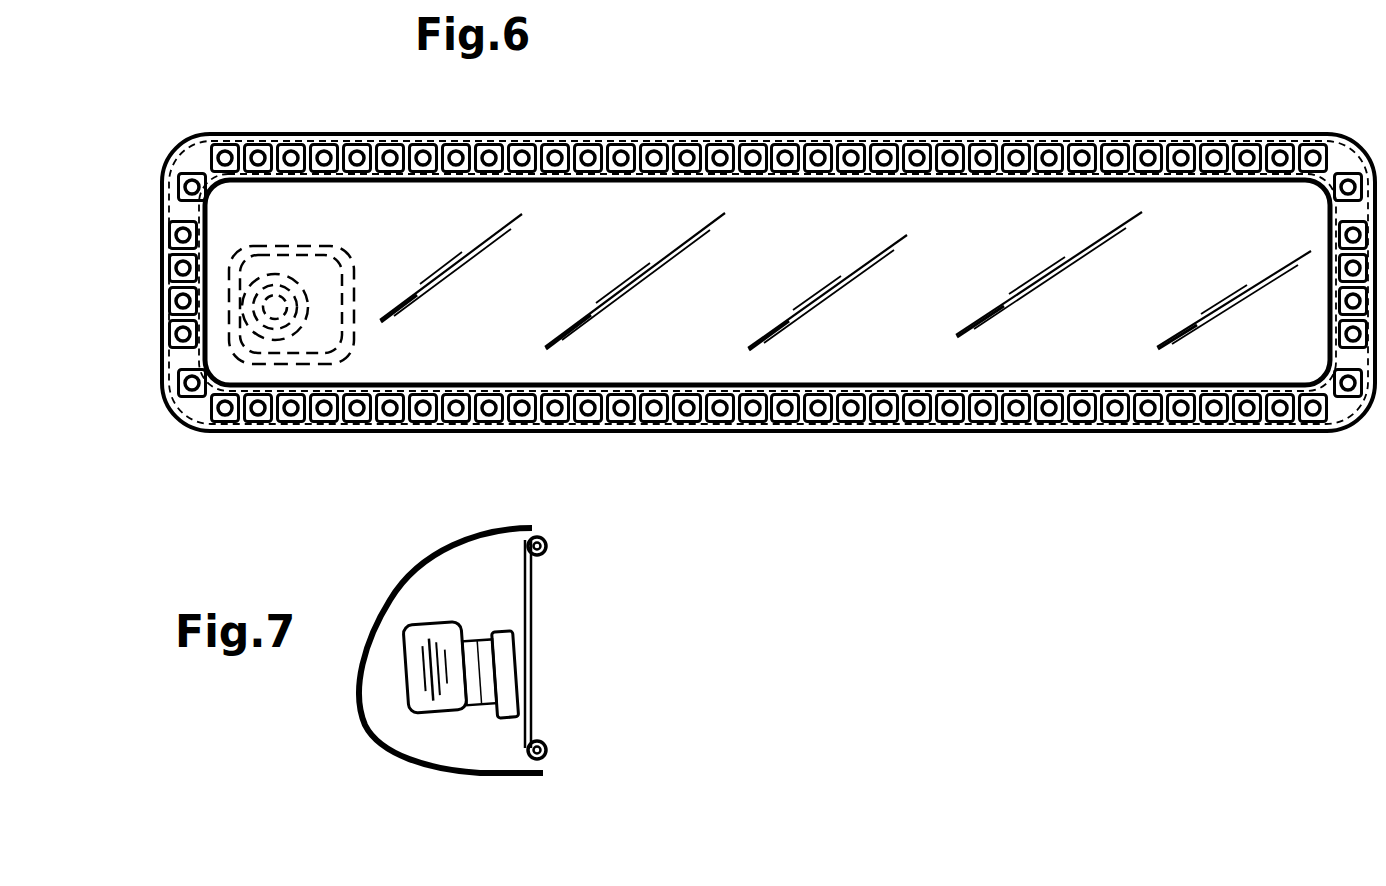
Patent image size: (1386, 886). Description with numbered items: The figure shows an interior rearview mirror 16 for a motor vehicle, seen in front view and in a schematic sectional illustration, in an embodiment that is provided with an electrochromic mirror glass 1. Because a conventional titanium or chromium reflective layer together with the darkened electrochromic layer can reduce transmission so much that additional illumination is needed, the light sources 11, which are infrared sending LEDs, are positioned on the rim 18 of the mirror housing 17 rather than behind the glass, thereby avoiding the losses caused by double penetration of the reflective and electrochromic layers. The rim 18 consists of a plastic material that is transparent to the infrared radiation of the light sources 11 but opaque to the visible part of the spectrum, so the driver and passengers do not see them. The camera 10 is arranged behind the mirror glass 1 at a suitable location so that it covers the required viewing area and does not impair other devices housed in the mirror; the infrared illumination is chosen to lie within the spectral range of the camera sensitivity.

In FIG. 6, the electrochromic mirror glass 1 is at (1050, 212).
In FIG. 6, the camera 10 is at (273, 320).
In FIG. 7, the camera 10 is at (437, 695).
In FIG. 6, the light sources 11 is at (225, 145).
In FIG. 7, the light sources 11 is at (526, 538).
In FIG. 6, the interior rearview mirror 16 is at (685, 108).
In FIG. 7, the mirror housing 17 is at (392, 590).
In FIG. 6, the rim 18 is at (841, 144).
In FIG. 7, the rim 18 is at (553, 547).